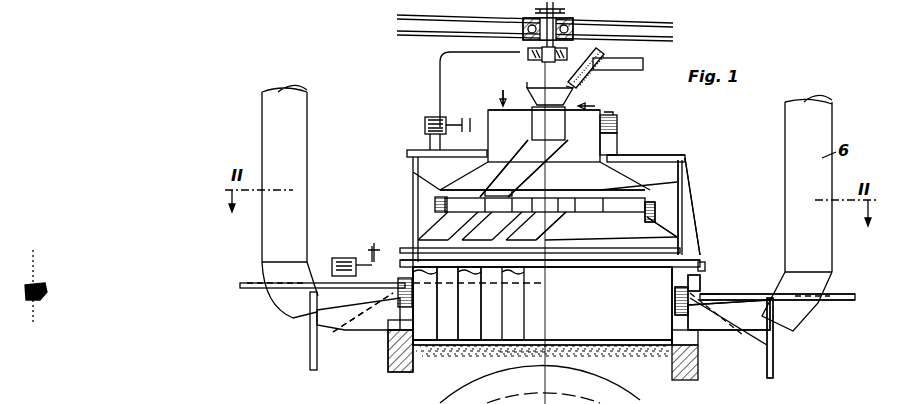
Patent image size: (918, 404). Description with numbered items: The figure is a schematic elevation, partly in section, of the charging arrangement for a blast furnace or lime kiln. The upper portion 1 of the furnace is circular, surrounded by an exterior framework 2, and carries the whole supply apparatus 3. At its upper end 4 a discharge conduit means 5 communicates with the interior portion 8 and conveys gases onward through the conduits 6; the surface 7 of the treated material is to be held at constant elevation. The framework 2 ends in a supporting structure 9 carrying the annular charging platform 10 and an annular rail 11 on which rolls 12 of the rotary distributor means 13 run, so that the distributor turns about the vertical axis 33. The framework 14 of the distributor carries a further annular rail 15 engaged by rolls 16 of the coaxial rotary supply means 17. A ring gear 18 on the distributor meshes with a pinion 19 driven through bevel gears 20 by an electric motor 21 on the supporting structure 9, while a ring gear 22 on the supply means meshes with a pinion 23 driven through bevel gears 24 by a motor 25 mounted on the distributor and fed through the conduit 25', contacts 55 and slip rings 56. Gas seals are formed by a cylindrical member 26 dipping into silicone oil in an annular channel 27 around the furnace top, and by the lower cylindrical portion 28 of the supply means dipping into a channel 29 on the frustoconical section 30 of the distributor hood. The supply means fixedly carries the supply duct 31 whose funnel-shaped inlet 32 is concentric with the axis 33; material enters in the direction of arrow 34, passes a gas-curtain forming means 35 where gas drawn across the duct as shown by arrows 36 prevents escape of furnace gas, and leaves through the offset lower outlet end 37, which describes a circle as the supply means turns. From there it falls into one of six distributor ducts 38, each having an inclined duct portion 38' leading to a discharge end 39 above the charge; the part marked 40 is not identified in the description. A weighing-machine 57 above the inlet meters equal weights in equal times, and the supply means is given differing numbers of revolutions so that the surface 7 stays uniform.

The upper portion of the furnace 1 is at (393, 372).
The exterior framework 2 is at (774, 367).
The supply apparatus 3 is at (690, 170).
The upper end 4 is at (672, 283).
The discharge conduit means 5 is at (730, 318).
The conduits 6 is at (303, 133).
The surface of the materials 7 is at (626, 341).
The interior portion of the furnace 8 is at (657, 340).
The supporting structure 9 is at (753, 296).
The annular charging platform 10 is at (836, 296).
The annular rail 11 is at (700, 292).
The rolls 12 is at (692, 282).
The rotary distributor means 13 is at (682, 156).
The framework 14 is at (683, 228).
The annular rail 15 is at (607, 150).
The rolls 16 is at (618, 127).
The rotary supply means 17 is at (615, 183).
The ring gear 18 is at (702, 265).
The pinion 19 is at (372, 246).
The bevel gears 20 is at (370, 262).
The electric motor 21 is at (340, 262).
The ring gear 22 is at (617, 117).
The pinion 23 is at (466, 110).
The bevel gear 24 is at (434, 119).
The motor 25 is at (416, 124).
The conduit 25' is at (461, 89).
The cylindrical member 26 is at (680, 268).
The annular channel 27 is at (688, 302).
The lower cylindrical portion 28 is at (445, 193).
The channel 29 is at (656, 210).
The frustoconical section 30 is at (650, 218).
The supply duct 31 is at (524, 160).
The funnel-shaped inlet 32 is at (525, 82).
The vertical axis 33 is at (546, 353).
The arrow 34 is at (597, 63).
The gas-curtain forming means 35 is at (566, 86).
The arrows 36 is at (511, 85).
The lower outlet end 37 is at (494, 198).
The distributor ducts 38 is at (538, 169).
The inclined duct portion 38' is at (567, 232).
The discharge end 39 is at (540, 326).
The column 40 is at (435, 313).
The contacts 55 is at (527, 46).
The slip rings 56 is at (548, 60).
The weighing-machine 57 is at (608, 62).